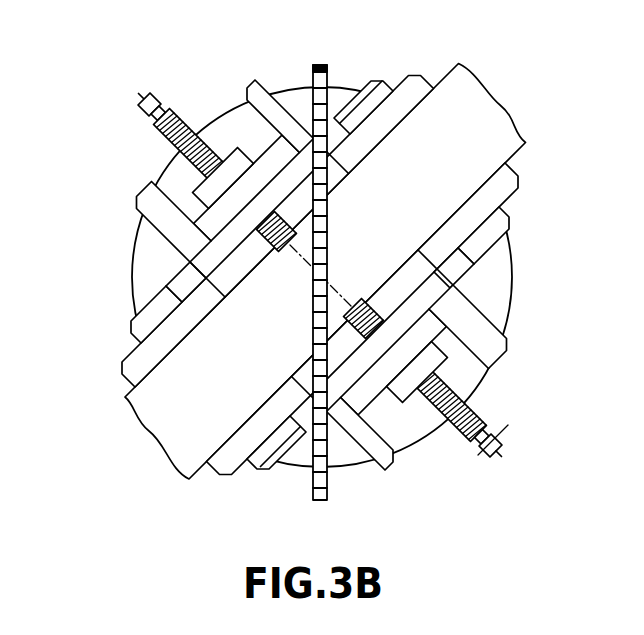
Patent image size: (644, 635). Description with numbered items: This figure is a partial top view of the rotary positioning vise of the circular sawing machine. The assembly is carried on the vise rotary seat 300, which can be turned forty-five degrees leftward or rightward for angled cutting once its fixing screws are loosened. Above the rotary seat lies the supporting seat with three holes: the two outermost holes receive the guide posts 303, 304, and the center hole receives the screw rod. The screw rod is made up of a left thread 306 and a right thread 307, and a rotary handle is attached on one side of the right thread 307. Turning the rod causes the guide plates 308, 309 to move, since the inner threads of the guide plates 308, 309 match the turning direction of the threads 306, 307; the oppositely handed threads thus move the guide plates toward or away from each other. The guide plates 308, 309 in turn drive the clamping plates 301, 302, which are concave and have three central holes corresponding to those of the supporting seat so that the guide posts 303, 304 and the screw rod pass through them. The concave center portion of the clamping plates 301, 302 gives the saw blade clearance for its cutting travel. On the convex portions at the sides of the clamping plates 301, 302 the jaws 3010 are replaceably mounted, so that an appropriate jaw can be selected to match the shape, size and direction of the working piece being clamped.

The vise rotary seat 300 is at (152, 252).
The clamping plate 301 is at (502, 221).
The clamping plate 302 is at (158, 313).
The guide post 303 is at (495, 337).
The guide post 304 is at (392, 442).
The left thread 306 is at (204, 112).
The right thread 307 is at (457, 452).
The guide plate 308 is at (215, 185).
The guide plate 309 is at (428, 365).
The jaws 3010 is at (138, 363).